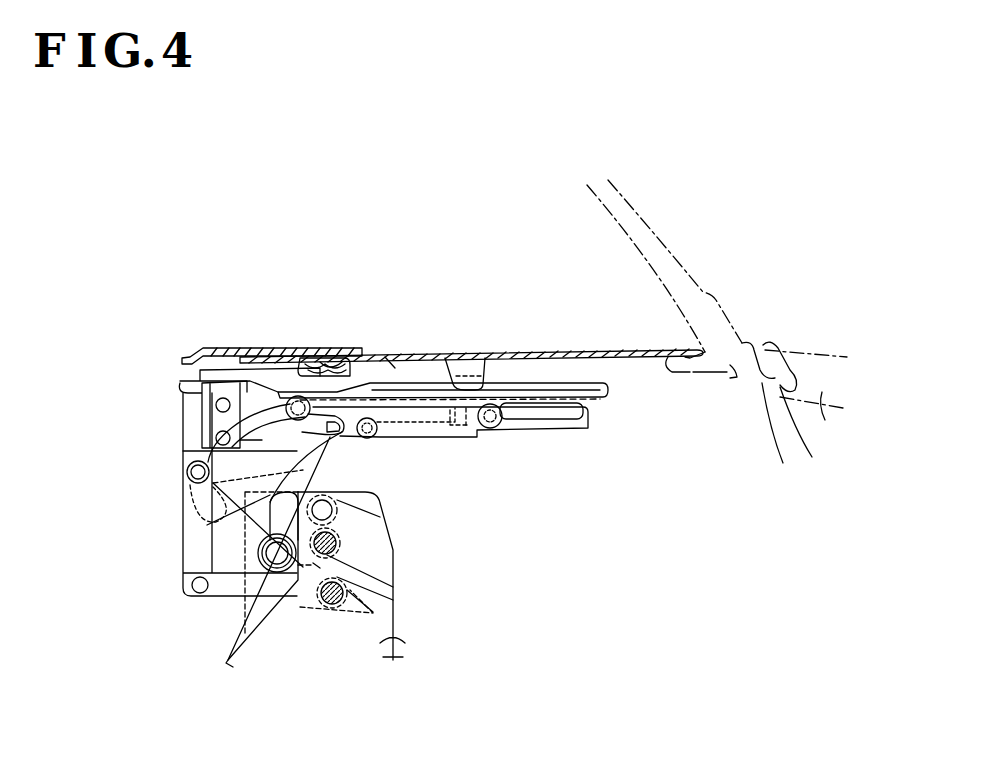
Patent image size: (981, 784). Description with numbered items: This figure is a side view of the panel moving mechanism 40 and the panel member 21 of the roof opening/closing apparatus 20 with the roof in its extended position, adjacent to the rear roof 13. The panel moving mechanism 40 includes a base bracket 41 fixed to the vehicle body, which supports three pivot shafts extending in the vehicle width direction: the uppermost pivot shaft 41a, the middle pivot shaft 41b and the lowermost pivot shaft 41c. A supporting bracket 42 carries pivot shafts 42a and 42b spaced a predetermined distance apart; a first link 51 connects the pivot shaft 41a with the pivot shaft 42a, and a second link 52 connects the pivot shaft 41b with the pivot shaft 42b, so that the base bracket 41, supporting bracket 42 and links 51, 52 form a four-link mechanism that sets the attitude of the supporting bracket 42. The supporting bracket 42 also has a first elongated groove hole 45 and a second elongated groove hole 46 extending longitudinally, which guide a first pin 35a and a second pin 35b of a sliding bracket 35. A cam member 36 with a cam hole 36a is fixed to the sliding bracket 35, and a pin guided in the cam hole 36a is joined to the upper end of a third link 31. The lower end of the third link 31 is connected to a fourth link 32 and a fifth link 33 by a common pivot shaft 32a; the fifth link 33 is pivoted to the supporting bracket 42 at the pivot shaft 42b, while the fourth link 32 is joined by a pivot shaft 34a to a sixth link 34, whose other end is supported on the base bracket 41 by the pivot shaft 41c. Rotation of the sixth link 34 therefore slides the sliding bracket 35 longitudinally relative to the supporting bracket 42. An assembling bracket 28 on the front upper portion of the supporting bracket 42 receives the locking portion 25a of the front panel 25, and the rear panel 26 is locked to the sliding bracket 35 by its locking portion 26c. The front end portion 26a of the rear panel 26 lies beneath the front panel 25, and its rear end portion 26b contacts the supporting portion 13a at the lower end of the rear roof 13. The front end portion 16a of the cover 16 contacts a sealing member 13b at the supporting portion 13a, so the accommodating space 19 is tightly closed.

The rear roof 13 is at (664, 268).
The supporting portion 13a is at (693, 374).
The sealing member 13b is at (768, 390).
The cover 16 is at (820, 392).
The front end portion of the cover 16a is at (782, 398).
The accommodating space 19 is at (627, 573).
The roof opening/closing apparatus 20 is at (213, 298).
The panel member 21 is at (426, 306).
The front panel 25 is at (242, 348).
The locking portion 25a is at (300, 355).
The rear panel 26 is at (460, 355).
The front end portion of the rear panel 26a is at (320, 362).
The rear end portion of the rear panel 26b is at (695, 350).
The locking portion 26c is at (400, 354).
The assembling bracket 28 is at (207, 375).
The third link 31 is at (197, 445).
The fourth link 32 is at (188, 552).
The common pivot shaft 32a is at (186, 474).
The fifth link 33 is at (258, 560).
The sixth link 34 is at (230, 612).
The pivot shaft 34a is at (200, 597).
The sliding bracket 35 is at (601, 394).
The first pin 35a is at (378, 437).
The second pin 35b is at (500, 428).
The cam member 36 is at (353, 436).
The cam hole 36a is at (330, 440).
The panel moving mechanism 40 is at (96, 537).
The base bracket 41 is at (393, 641).
The pivot shaft 41a is at (343, 507).
The pivot shaft 41b is at (370, 556).
The pivot shaft 41c is at (362, 600).
The supporting bracket 42 is at (190, 420).
The pivot shaft 42a is at (190, 504).
The pivot shaft 42b is at (232, 605).
The first elongated groove hole 45 is at (420, 425).
The second elongated groove hole 46 is at (537, 413).
The first link 51 is at (323, 508).
The second link 52 is at (375, 596).